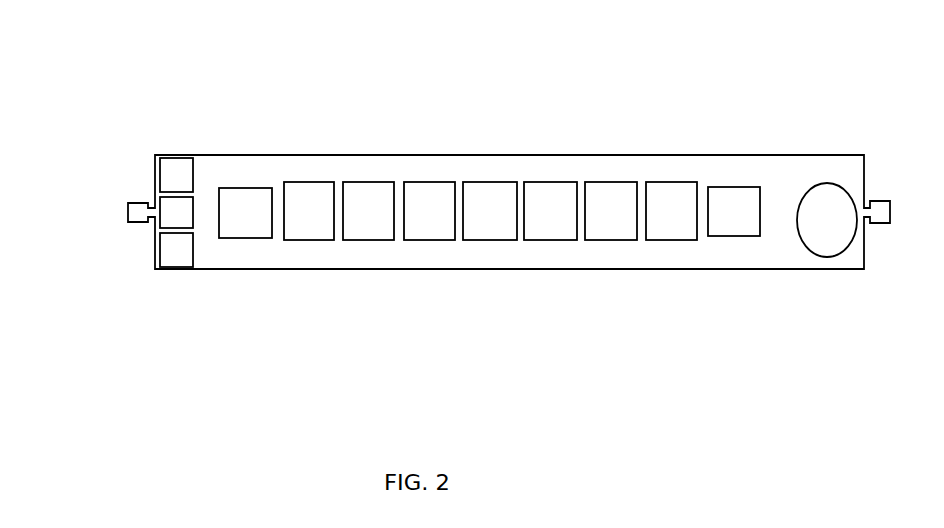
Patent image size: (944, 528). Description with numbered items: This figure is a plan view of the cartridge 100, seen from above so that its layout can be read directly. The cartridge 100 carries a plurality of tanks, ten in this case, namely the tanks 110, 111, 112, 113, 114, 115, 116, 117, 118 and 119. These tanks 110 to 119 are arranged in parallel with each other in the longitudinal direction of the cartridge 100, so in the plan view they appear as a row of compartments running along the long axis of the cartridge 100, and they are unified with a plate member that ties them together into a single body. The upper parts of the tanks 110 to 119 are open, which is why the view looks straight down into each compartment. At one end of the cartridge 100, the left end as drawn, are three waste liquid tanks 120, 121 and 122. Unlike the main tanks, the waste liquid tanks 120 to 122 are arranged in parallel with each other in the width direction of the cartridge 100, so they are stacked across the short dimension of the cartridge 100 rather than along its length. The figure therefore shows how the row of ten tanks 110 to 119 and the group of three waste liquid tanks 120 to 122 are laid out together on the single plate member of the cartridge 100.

The cartridge 100 is at (367, 95).
The tank 110 is at (250, 213).
The tank 111 is at (313, 217).
The tank 112 is at (368, 222).
The tank 113 is at (428, 222).
The tank 114 is at (491, 217).
The tank 115 is at (551, 223).
The tank 116 is at (610, 223).
The tank 117 is at (668, 222).
The tank 118 is at (735, 218).
The tank 119 is at (822, 218).
The waste liquid tank 120 is at (173, 180).
The waste liquid tank 121 is at (173, 212).
The waste liquid tank 122 is at (177, 250).